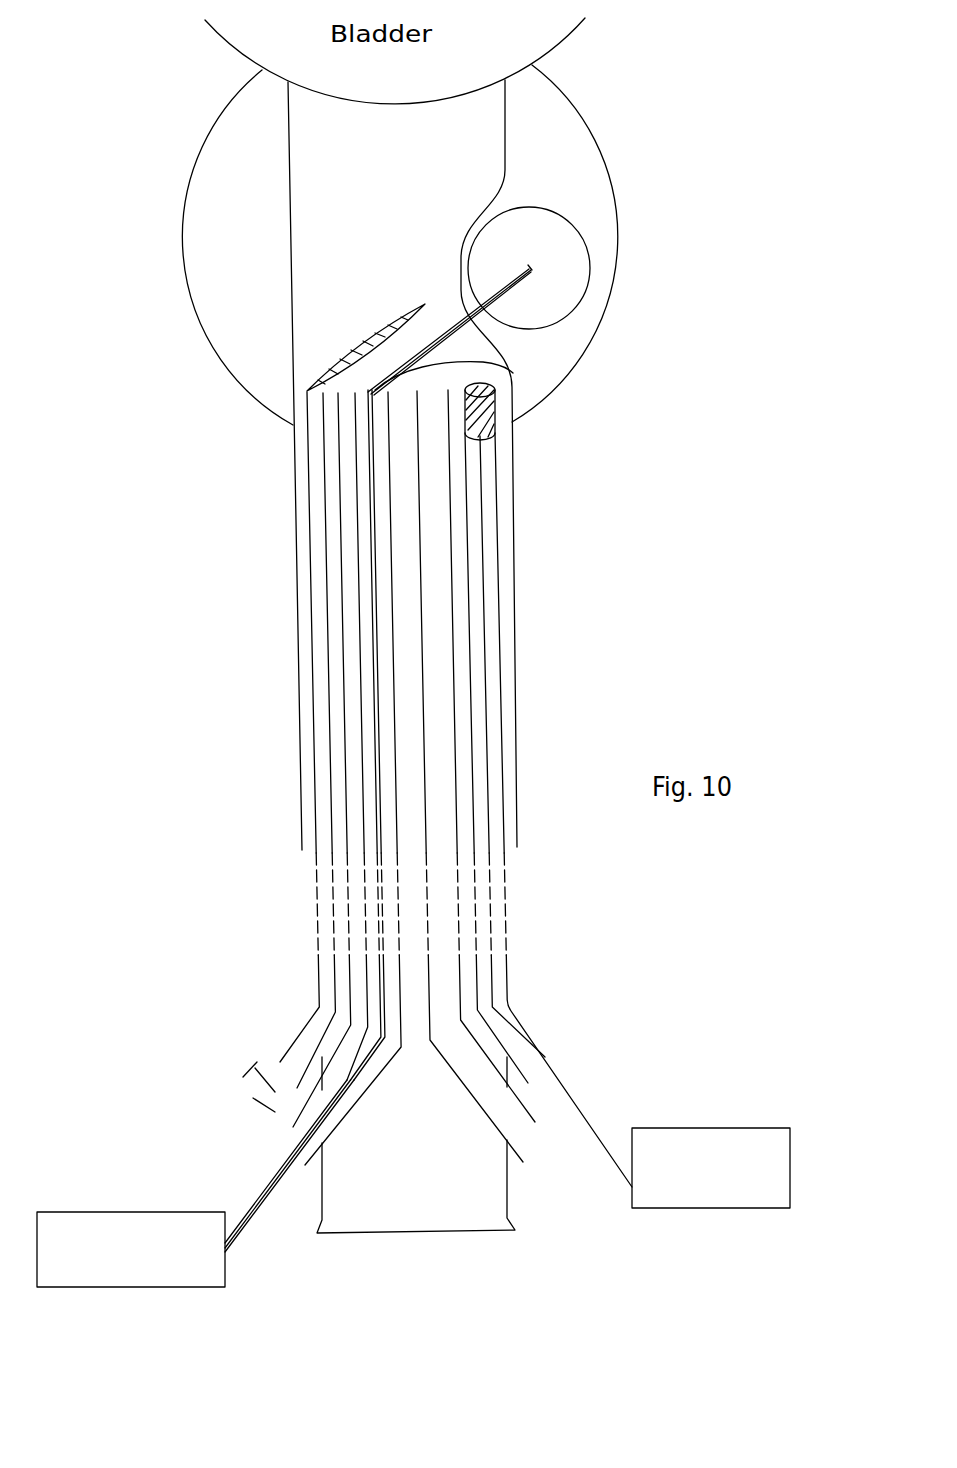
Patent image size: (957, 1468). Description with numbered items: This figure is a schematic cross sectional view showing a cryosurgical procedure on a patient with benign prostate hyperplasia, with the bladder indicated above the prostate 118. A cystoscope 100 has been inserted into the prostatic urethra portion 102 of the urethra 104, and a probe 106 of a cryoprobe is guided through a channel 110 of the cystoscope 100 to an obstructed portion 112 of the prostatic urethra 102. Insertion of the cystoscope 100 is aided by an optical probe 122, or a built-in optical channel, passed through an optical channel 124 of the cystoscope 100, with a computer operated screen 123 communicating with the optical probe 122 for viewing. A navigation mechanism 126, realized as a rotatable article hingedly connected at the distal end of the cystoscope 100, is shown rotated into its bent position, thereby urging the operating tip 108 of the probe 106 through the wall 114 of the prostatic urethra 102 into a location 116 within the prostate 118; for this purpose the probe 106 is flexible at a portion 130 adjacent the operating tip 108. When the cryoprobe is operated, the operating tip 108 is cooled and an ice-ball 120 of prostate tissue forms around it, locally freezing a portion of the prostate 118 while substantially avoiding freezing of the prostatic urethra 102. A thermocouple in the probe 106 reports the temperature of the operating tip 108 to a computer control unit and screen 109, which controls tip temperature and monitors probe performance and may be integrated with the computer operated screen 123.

The cystoscope 100 is at (493, 1193).
The prostatic urethra portion 102 is at (448, 182).
The urethra 104 is at (510, 763).
The probe 106 is at (533, 317).
The operating tip 108 is at (520, 285).
The computer control unit and screen 109 is at (177, 1287).
The channel 110 is at (303, 1122).
The obstructed portion 112 is at (407, 272).
The wall 114 is at (457, 269).
The location 116 is at (540, 272).
The prostate 118 is at (227, 217).
The ice-ball 120 is at (500, 347).
The optical probe 122 is at (485, 630).
The computer operated screen 123 is at (755, 1210).
The optical channel 124 is at (525, 1028).
The navigation mechanism 126 is at (500, 347).
The flexible portion 130 is at (513, 373).